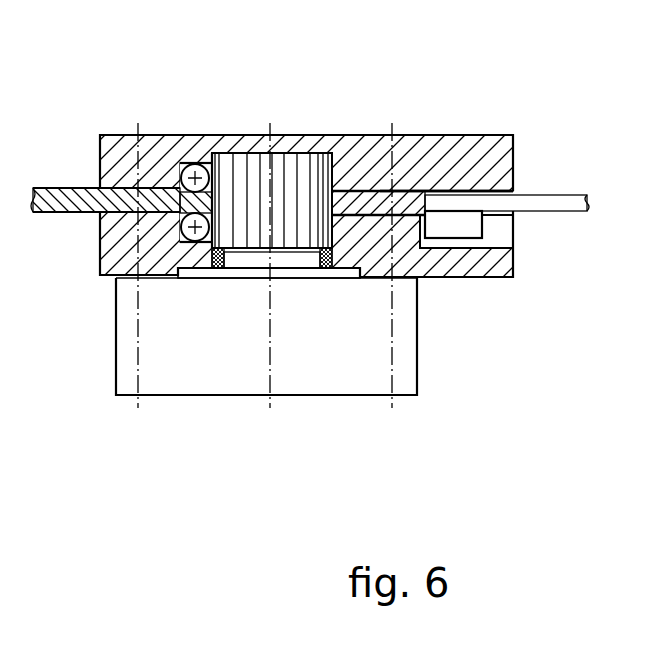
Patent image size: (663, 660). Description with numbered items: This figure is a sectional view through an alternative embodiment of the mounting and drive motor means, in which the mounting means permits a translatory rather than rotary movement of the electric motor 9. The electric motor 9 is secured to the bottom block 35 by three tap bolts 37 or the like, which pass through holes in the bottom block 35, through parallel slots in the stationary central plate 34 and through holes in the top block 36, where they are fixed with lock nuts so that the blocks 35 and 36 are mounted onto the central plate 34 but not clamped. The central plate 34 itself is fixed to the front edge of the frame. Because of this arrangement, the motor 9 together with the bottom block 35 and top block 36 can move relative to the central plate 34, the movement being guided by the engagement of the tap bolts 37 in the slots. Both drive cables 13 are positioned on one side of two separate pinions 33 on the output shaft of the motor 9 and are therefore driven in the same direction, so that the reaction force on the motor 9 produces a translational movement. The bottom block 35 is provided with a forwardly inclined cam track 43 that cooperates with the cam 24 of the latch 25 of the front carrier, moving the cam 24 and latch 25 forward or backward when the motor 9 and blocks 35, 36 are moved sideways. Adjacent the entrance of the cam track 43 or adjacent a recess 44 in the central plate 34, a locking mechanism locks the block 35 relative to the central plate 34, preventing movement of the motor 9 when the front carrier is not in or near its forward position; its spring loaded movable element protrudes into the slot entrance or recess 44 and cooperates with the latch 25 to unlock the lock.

The electric motor 9 is at (318, 380).
The drive cables 13 is at (183, 170).
The cam 24 is at (458, 222).
The latch 25 is at (548, 195).
The pinions 33 is at (244, 165).
The stationary central plate 34 is at (63, 190).
The bottom block 35 is at (438, 277).
The top block 36 is at (368, 148).
The tap bolts 37 is at (135, 378).
The cam track 43 is at (466, 371).
The recess 44 is at (422, 191).